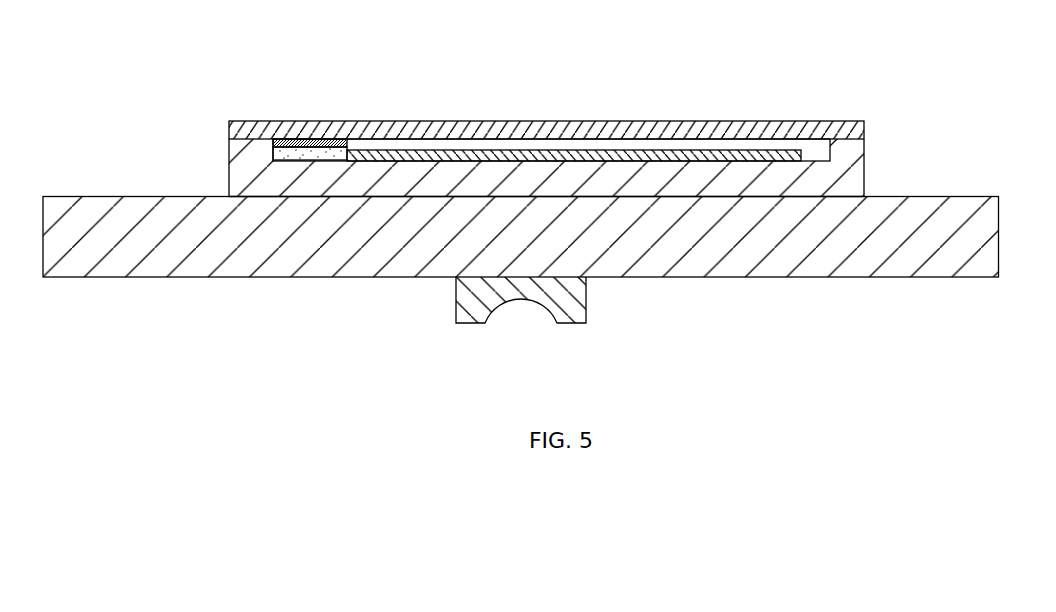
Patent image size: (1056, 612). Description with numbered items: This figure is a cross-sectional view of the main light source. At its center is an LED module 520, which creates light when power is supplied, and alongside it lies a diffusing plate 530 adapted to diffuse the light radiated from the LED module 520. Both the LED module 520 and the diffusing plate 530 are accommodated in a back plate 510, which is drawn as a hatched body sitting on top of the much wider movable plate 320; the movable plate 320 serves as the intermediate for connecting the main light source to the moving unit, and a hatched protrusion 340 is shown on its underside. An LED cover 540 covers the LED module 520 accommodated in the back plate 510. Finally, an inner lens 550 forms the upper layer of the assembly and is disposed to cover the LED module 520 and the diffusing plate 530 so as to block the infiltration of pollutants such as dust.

The movable plate 320 is at (249, 258).
The protrusion with groove 340 is at (473, 302).
The back plate 510 is at (255, 168).
The LED module 520 is at (310, 150).
The diffusing plate 530 is at (664, 158).
The LED cover 540 is at (290, 140).
The inner lens 550 is at (538, 128).